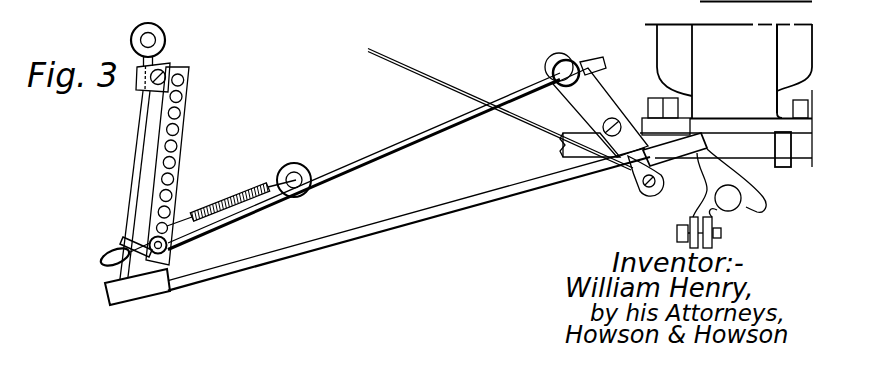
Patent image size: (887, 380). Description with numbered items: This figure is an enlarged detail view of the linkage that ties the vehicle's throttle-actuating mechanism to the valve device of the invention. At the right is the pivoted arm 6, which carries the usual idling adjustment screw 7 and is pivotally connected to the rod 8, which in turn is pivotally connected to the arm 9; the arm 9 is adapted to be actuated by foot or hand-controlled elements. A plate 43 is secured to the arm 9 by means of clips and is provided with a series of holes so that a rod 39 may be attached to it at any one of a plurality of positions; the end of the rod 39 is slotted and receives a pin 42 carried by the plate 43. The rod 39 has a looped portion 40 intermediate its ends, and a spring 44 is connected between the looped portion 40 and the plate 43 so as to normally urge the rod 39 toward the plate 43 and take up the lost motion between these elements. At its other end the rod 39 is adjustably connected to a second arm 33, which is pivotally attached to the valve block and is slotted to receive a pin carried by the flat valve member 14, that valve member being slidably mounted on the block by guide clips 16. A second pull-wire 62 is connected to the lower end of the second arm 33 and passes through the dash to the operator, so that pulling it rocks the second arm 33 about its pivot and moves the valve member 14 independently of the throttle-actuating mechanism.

The pivoted arm 6 is at (703, 170).
The idling adjustment screw 7 is at (683, 224).
The rod 8 is at (352, 229).
The arm 9 is at (138, 143).
The valve member 14 is at (757, 154).
The guide clips 16 is at (777, 130).
The second arm 33 is at (597, 74).
The rod 39 is at (367, 158).
The looped portion 40 is at (301, 166).
The pin 42 is at (124, 252).
The plate 43 is at (179, 173).
The spring 44 is at (246, 190).
The second pull-wire 62 is at (430, 71).